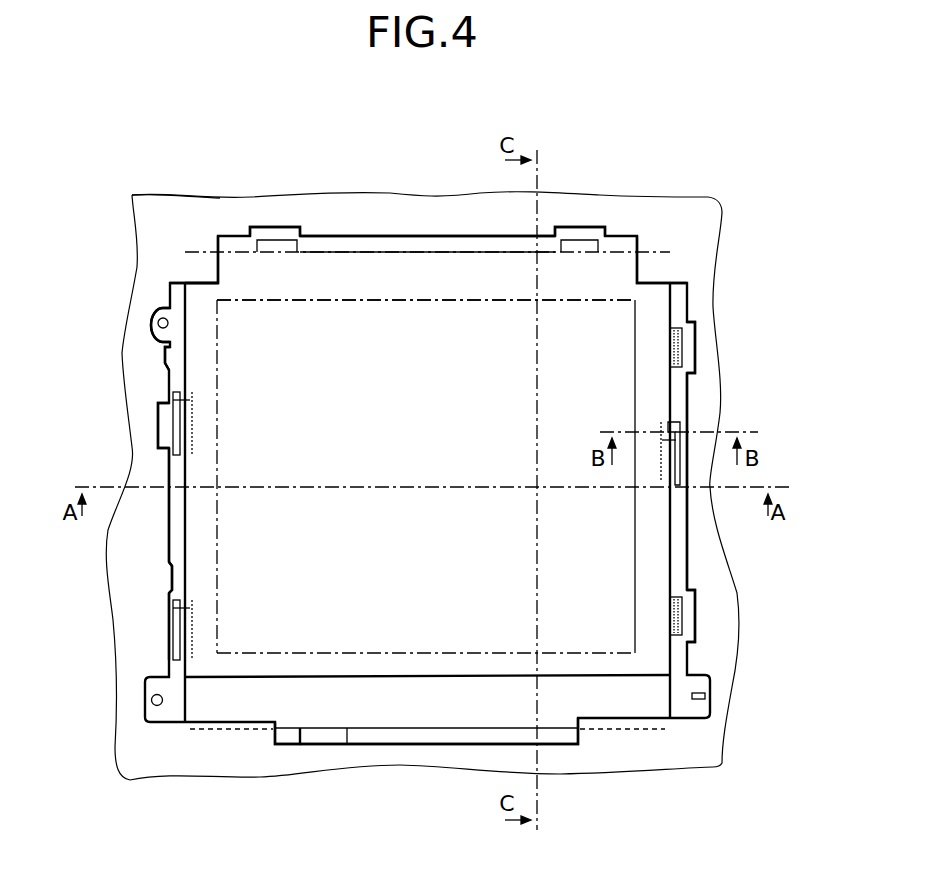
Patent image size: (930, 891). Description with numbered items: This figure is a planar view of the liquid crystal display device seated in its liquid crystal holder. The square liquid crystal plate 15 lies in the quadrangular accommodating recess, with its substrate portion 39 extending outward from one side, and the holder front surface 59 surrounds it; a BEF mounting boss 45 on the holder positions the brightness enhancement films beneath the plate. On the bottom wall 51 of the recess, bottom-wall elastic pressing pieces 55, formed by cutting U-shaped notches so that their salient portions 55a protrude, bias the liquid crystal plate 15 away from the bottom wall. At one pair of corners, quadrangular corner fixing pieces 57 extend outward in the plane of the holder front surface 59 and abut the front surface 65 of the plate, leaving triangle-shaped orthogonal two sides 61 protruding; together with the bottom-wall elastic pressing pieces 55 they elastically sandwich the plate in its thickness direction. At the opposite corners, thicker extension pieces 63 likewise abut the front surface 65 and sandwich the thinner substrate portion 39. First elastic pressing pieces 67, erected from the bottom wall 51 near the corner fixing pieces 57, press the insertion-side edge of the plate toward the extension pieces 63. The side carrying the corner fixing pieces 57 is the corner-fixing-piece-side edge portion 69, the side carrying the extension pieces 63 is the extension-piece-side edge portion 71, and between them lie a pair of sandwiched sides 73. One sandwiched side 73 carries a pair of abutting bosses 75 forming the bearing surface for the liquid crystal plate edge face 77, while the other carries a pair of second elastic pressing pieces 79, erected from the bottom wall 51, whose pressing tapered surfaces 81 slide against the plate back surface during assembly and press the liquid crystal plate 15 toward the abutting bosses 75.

The liquid crystal plate 15 is at (690, 572).
The substrate portion 39 is at (362, 718).
The BEF mounting boss 45 is at (698, 693).
The bottom wall 51 is at (165, 462).
The bottom-wall elastic pressing piece 55 is at (672, 458).
The salient portion 55a is at (185, 400).
The corner fixing piece 57 is at (290, 298).
The holder front surface 59 is at (157, 213).
The orthogonal two sides 61 is at (238, 248).
The extension piece 63 is at (297, 716).
The front surface 65 is at (383, 348).
The first elastic pressing piece 67 is at (272, 236).
The corner-fixing-piece-side edge portion 69 is at (374, 238).
The extension-piece-side edge portion 71 is at (418, 718).
The sandwiched side 73 is at (195, 512).
The abutting boss 75 is at (156, 316).
The liquid crystal plate edge face 77 is at (165, 352).
The second elastic pressing piece 79 is at (690, 336).
The pressing tapered surface 81 is at (670, 350).